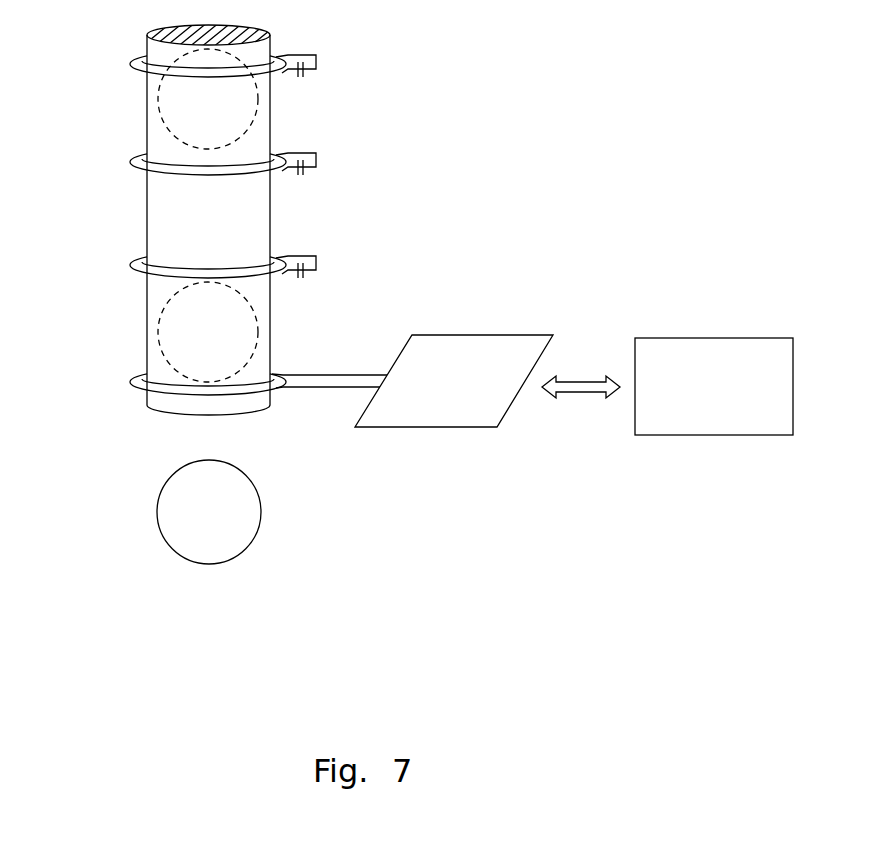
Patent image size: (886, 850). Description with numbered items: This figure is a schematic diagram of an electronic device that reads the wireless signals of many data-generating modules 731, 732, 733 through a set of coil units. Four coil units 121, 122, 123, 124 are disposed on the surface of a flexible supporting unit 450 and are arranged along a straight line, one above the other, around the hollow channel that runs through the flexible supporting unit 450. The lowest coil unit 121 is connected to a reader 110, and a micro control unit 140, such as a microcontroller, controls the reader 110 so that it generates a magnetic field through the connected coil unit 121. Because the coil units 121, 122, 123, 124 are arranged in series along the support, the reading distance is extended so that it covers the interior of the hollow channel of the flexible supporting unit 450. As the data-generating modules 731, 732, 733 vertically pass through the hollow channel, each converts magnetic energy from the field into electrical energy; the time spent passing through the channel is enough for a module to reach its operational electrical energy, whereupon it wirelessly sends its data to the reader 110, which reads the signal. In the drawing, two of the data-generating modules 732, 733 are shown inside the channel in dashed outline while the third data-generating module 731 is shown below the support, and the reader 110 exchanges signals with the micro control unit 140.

The reader 110 is at (423, 427).
The micro control unit 140 is at (715, 435).
The coil unit 121 is at (130, 378).
The coil unit 122 is at (130, 261).
The coil unit 123 is at (130, 158).
The coil unit 124 is at (130, 60).
The flexible supporting unit 450 is at (172, 415).
The data-generating module 731 is at (261, 520).
The data-generating module 732 is at (258, 330).
The data-generating module 733 is at (268, 106).